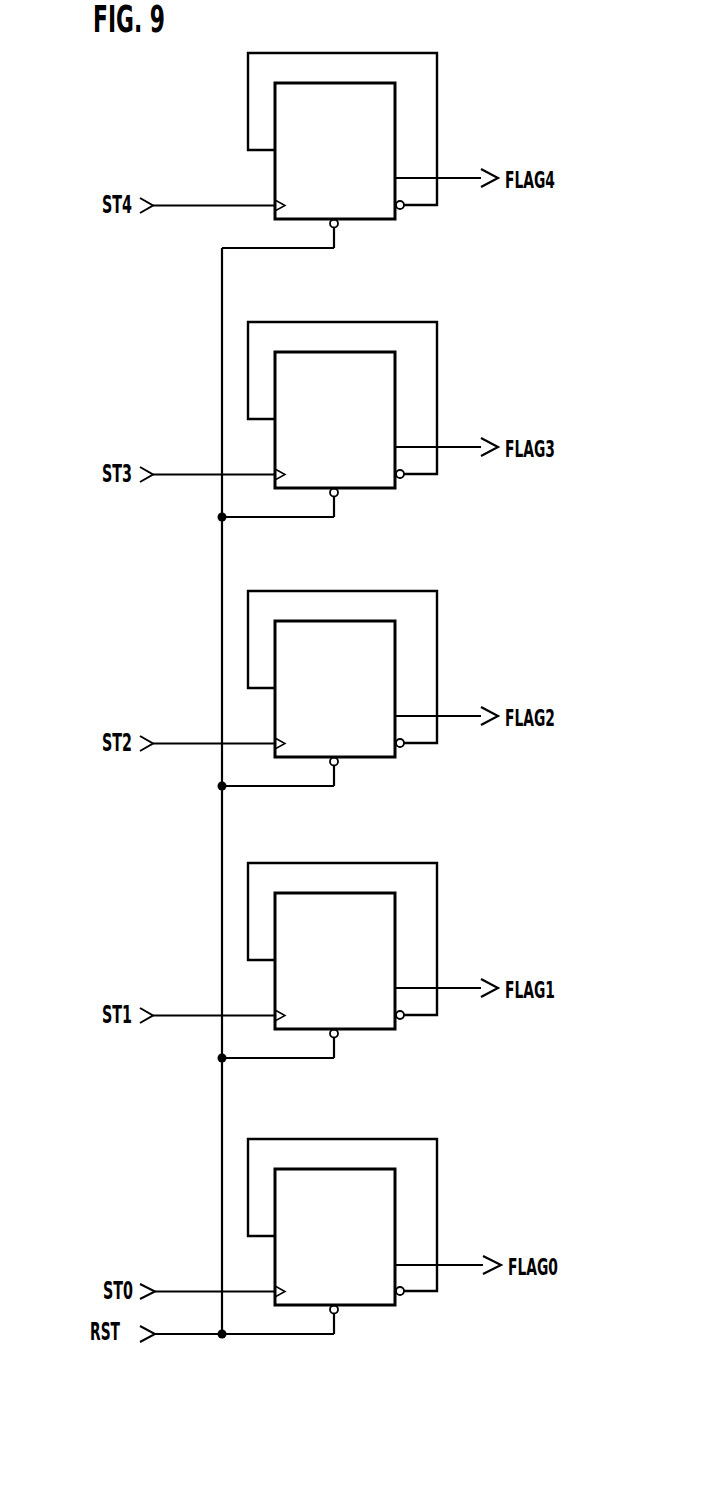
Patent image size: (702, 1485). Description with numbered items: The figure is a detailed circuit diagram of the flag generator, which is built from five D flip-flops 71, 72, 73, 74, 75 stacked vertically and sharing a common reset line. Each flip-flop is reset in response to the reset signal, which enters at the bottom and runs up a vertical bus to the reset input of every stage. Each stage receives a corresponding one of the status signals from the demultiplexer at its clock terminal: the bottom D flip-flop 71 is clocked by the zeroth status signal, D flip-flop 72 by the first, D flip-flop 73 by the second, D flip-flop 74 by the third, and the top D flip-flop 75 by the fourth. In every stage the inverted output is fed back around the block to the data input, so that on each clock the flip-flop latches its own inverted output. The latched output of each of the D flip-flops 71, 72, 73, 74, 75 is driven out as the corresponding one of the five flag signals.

The D flip-flop 71 is at (374, 1236).
The D flip-flop 72 is at (373, 960).
The D flip-flop 73 is at (373, 688).
The D flip-flop 74 is at (373, 419).
The D flip-flop 75 is at (389, 123).